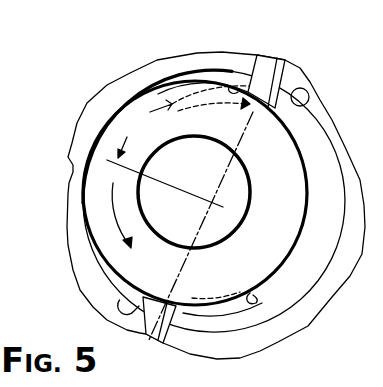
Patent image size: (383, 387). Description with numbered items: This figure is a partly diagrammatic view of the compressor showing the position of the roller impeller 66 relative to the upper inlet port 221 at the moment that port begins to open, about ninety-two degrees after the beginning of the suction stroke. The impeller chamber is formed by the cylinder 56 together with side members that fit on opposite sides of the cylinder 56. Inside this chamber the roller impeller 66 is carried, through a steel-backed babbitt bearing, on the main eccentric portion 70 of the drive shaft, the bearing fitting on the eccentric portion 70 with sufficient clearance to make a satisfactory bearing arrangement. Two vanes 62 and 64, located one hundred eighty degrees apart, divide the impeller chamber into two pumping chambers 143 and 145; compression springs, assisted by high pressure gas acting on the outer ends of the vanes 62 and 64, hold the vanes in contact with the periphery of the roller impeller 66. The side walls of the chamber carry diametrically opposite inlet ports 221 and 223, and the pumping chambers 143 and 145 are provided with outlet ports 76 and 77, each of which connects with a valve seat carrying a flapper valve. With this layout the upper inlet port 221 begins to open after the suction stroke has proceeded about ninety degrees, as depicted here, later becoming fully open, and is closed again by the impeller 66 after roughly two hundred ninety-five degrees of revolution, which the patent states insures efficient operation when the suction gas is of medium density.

The cylinder 56 is at (118, 92).
The vane 62 is at (284, 76).
The vane 64 is at (160, 342).
The roller impeller 66 is at (160, 140).
The main eccentric portion 70 is at (180, 227).
The outlet port 76 is at (304, 95).
The outlet port 77 is at (120, 302).
The pumping chamber 143 is at (202, 76).
The pumping chamber 145 is at (319, 160).
The upper inlet port 221 is at (235, 87).
The inlet port 223 is at (264, 291).